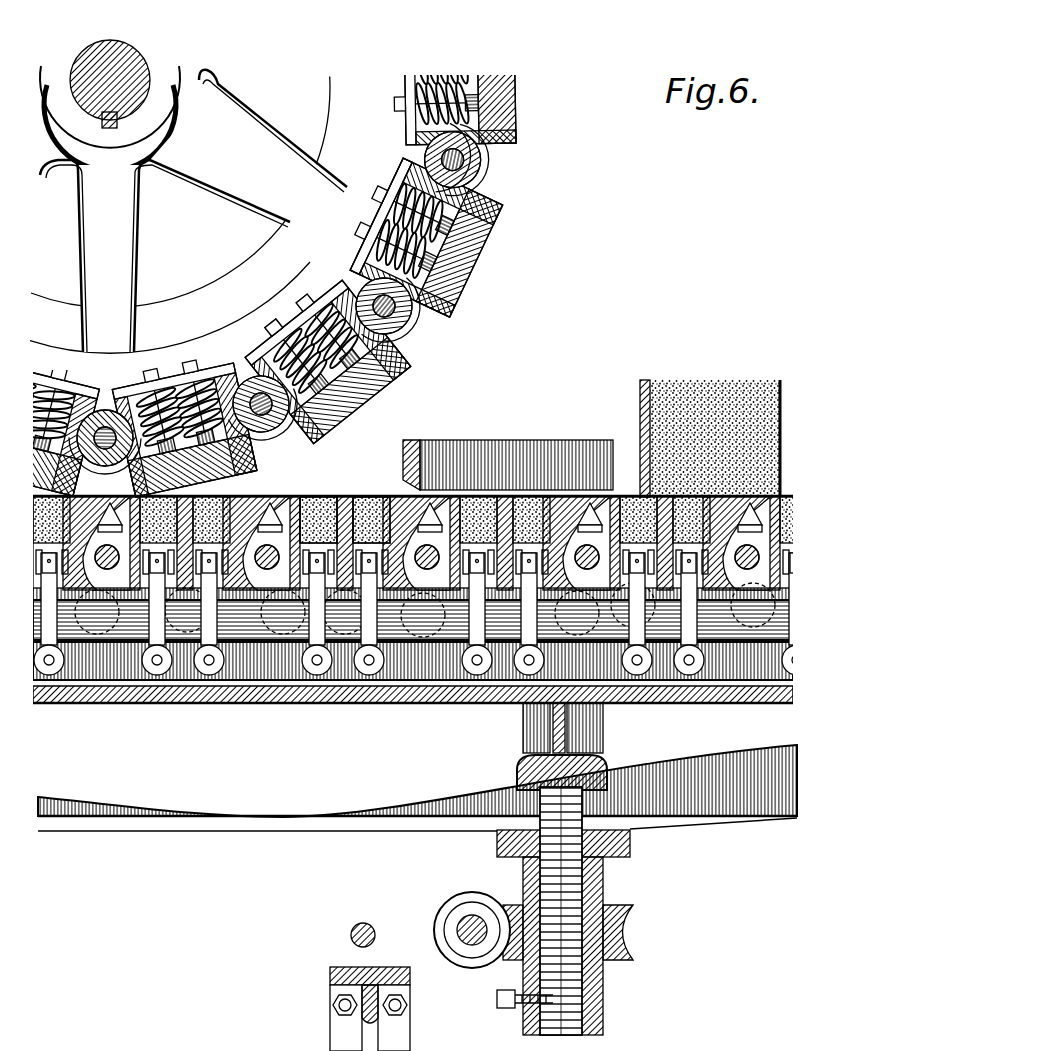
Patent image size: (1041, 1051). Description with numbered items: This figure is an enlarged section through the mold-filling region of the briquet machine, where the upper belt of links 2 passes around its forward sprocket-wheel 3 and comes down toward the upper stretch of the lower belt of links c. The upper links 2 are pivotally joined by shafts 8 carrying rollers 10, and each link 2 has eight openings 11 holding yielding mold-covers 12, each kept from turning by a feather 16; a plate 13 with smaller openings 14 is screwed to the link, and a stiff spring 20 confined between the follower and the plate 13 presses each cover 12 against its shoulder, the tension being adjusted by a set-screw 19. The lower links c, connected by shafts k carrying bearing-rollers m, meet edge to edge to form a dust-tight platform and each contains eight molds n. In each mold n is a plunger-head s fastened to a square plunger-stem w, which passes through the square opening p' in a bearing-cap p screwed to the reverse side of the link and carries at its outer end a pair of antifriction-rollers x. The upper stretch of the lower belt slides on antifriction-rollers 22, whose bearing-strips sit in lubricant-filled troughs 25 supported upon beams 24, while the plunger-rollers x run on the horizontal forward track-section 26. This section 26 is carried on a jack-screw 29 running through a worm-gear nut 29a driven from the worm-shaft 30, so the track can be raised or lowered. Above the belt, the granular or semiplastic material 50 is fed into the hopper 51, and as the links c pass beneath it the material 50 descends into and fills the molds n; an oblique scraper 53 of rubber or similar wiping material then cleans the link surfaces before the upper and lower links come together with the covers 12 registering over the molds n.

The link 2 is at (257, 455).
The sprocket-wheel 3 is at (285, 248).
The shaft 8 is at (483, 158).
The roller 10 is at (480, 173).
The opening 11 is at (413, 335).
The yielding mold-cover 12 is at (470, 232).
The plate 13 is at (375, 266).
The opening 14 is at (185, 378).
The set-screw 19 is at (310, 302).
The spring 20 is at (383, 223).
The link c is at (260, 513).
The mold n is at (362, 497).
The plunger-head s is at (318, 545).
The bearing-roller m is at (105, 612).
The shaft k is at (283, 612).
The plunger-stem w is at (345, 612).
The square opening p' is at (425, 615).
The antifriction-roller x is at (528, 650).
The bearing-cap p is at (622, 614).
The trough 25 is at (240, 627).
The antifriction-roller 22 is at (413, 620).
The forward track-section 26 is at (298, 688).
The feather 16 is at (113, 706).
The beam 24 is at (113, 822).
The jack-screw 29 is at (587, 797).
The nut 29a is at (630, 928).
The worm-shaft 30 is at (458, 922).
The material 50 is at (710, 393).
The hopper 51 is at (641, 420).
The oblique scraper 53 is at (423, 473).